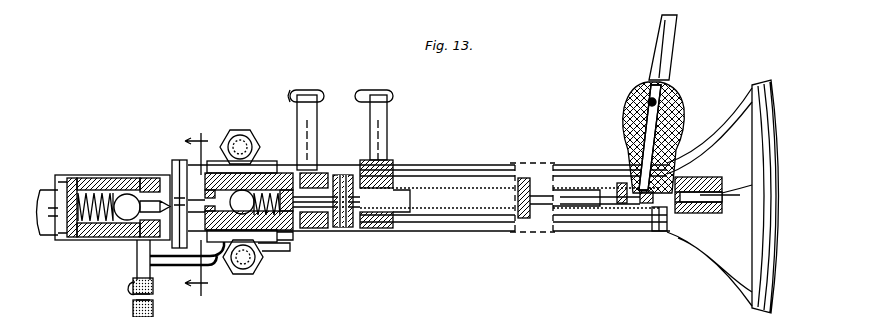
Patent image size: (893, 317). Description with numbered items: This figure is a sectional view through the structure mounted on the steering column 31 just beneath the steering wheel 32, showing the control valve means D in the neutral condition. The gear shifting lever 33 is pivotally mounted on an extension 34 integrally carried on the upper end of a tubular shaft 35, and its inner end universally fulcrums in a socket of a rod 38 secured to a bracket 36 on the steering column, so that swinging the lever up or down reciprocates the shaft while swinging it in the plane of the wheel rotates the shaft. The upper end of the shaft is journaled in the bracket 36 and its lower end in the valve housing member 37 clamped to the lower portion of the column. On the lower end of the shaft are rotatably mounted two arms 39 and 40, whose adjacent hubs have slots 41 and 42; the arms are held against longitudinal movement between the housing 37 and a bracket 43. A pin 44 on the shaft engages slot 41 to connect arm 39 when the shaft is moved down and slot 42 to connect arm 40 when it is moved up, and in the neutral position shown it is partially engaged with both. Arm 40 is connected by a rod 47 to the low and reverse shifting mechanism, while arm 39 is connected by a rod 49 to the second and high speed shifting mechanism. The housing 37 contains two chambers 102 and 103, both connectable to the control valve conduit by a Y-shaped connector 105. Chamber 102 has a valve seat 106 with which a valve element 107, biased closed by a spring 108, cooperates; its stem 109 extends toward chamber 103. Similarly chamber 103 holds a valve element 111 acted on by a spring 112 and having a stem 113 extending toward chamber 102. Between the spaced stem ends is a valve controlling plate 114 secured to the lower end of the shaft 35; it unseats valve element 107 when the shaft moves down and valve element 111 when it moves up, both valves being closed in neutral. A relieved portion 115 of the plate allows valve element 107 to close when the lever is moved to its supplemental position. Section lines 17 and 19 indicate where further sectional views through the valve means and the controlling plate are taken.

The section line 17— 17 is at (234, 215).
The section line 19— 19 is at (201, 214).
The steering column 31 is at (723, 130).
The steering wheel 32 is at (757, 88).
The gear shifting lever 33 is at (652, 54).
The extension 34 is at (625, 102).
The tubular shaft 35 is at (478, 186).
The bracket 36 is at (700, 215).
The valve housing member 37 is at (231, 143).
The rod 38 is at (658, 233).
The arm 39 is at (309, 134).
The arm 40 is at (382, 132).
The slot 41 is at (322, 230).
The slot 42 is at (352, 230).
The bracket 43 is at (410, 233).
The pin 44 is at (343, 176).
The rod 47 is at (365, 93).
The rod 49 is at (312, 93).
The chamber 102 is at (107, 192).
The chamber 103 is at (262, 176).
The Y-shaped connector 105 is at (137, 261).
The valve seat 106 is at (146, 178).
The valve element 107 is at (129, 193).
The spring 108 is at (97, 178).
The stem 109 is at (152, 197).
The valve element 111 is at (259, 253).
The spring 112 is at (278, 242).
The stem 113 is at (222, 262).
The valve controlling plate 114 is at (178, 160).
The relieved surface portion 115 is at (180, 245).
The control valve means D is at (215, 156).